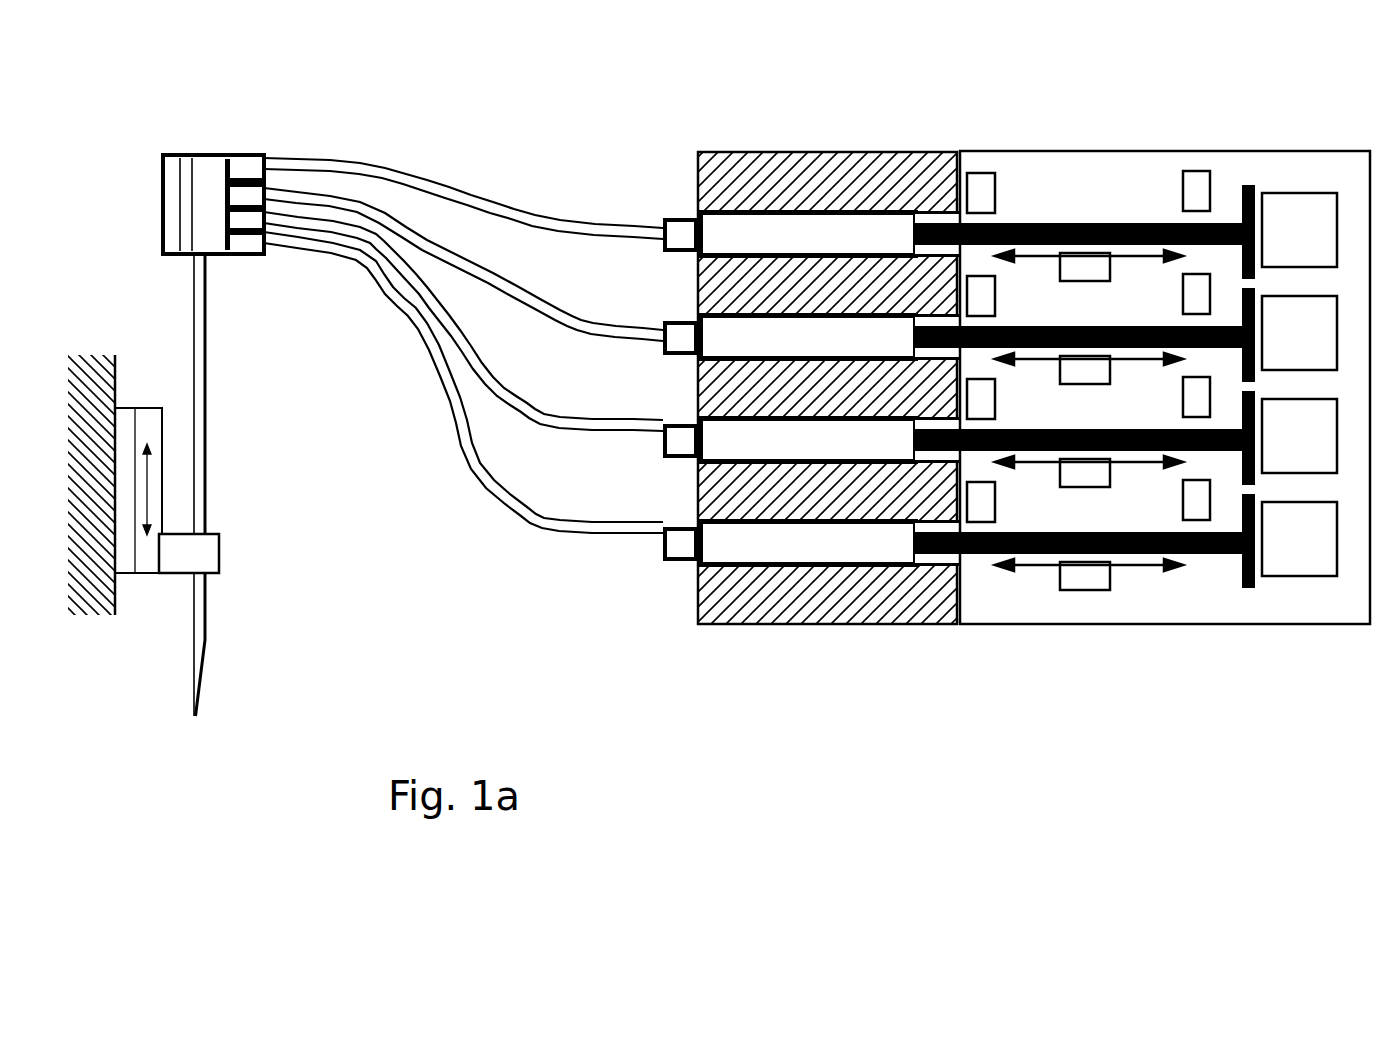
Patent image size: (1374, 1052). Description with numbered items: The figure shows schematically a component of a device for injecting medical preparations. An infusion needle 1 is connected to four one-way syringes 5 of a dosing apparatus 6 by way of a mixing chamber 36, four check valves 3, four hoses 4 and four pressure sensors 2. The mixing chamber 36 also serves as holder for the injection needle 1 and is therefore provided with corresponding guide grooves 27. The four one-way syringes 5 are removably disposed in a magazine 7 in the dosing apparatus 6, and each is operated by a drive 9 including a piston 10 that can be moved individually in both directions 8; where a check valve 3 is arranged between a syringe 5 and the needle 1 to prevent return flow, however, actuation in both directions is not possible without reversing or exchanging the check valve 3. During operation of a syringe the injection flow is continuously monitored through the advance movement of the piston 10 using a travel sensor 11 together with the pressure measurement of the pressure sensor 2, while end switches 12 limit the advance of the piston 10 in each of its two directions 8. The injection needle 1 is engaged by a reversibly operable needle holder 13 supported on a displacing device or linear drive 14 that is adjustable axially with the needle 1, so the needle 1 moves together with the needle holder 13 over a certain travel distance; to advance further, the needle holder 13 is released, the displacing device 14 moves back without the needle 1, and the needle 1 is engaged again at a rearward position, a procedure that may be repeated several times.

The infusion needle 1 is at (207, 383).
The pressure sensor 2 is at (677, 228).
The check valve 3 is at (243, 167).
The hose 4 is at (413, 337).
The one-way syringe 5 is at (811, 246).
The dosing apparatus 6 is at (1069, 170).
The magazine 7 is at (815, 165).
The directions of movement 8 is at (1150, 330).
The drive 9 is at (1307, 320).
The piston 10 is at (1022, 222).
The travel sensor 11 is at (1097, 358).
The end switch 12 is at (983, 292).
The needle holder 13 is at (207, 554).
The displacing device 14 is at (127, 554).
The guide groove 27 is at (186, 168).
The mixing chamber 36 is at (173, 197).